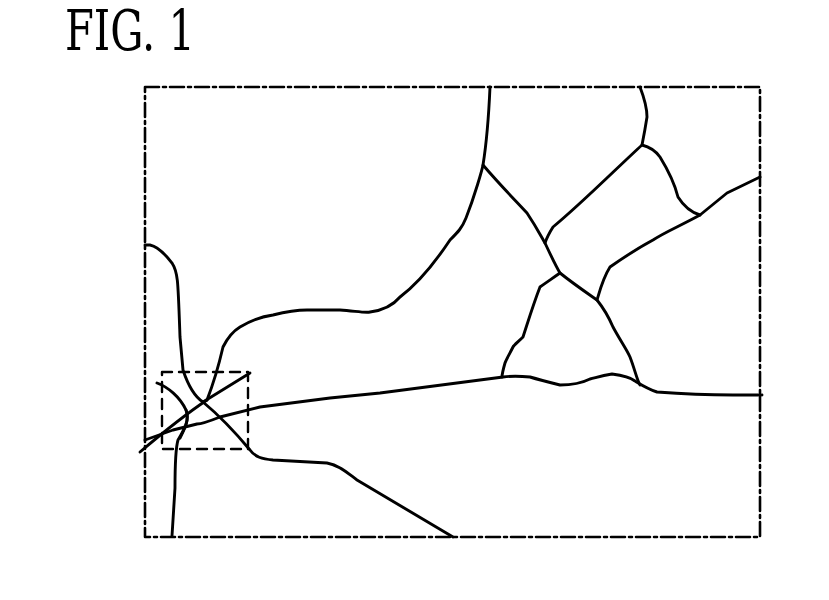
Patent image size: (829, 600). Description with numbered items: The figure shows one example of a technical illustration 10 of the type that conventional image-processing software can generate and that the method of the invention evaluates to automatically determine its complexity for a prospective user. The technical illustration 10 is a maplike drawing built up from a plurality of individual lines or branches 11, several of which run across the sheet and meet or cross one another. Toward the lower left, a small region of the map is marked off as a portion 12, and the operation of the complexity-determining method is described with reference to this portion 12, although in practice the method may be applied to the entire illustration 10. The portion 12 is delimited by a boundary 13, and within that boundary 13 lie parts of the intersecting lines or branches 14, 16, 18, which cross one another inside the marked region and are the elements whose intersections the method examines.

The technical illustration 10 is at (474, 59).
The lines or branches 11 is at (542, 285).
The portion 12 is at (167, 420).
The boundary 13 is at (249, 426).
The intersecting line or branch 14 is at (157, 383).
The intersecting line or branch 16 is at (250, 376).
The intersecting line or branch 18 is at (189, 440).